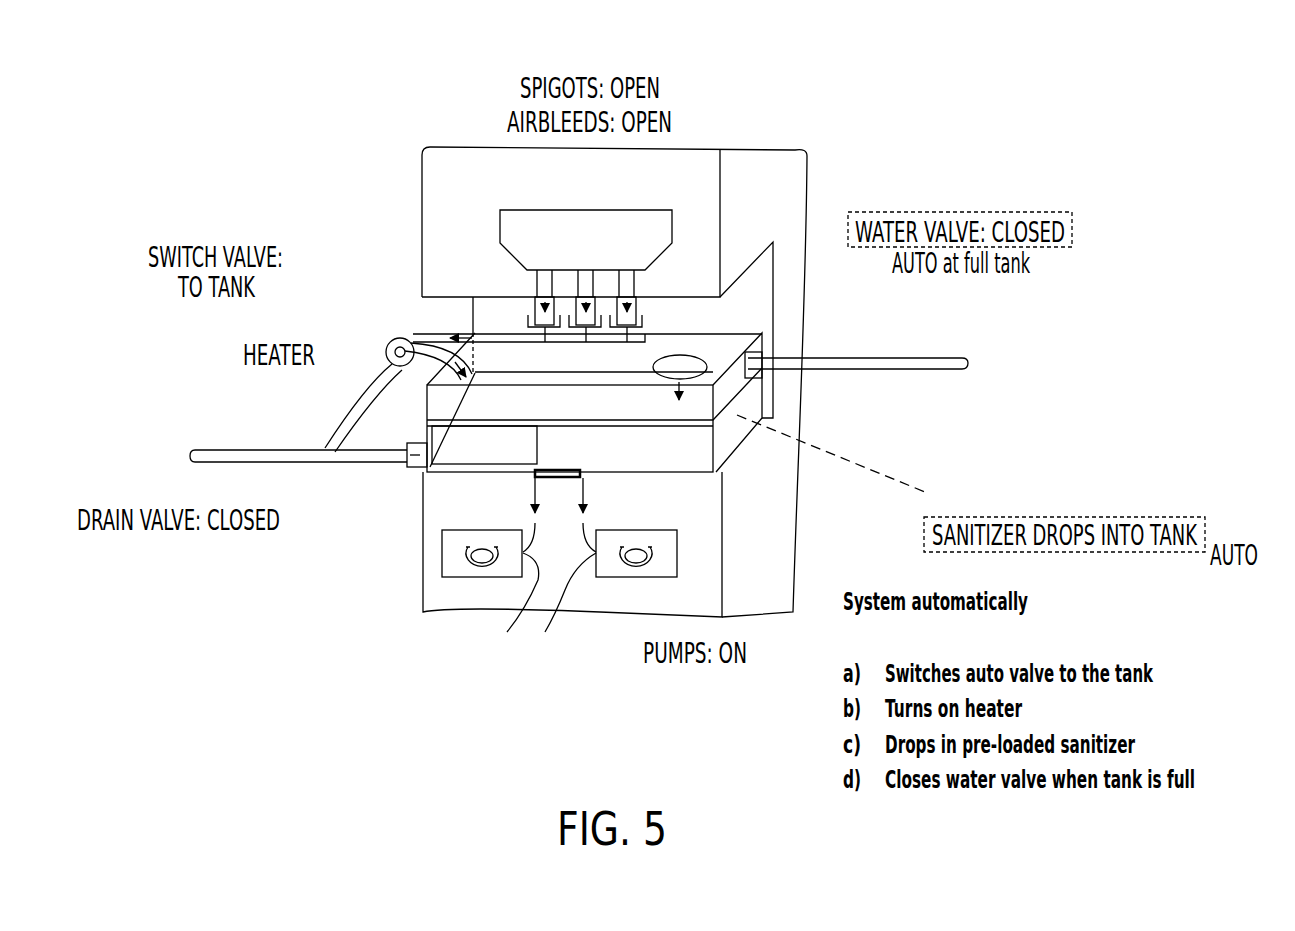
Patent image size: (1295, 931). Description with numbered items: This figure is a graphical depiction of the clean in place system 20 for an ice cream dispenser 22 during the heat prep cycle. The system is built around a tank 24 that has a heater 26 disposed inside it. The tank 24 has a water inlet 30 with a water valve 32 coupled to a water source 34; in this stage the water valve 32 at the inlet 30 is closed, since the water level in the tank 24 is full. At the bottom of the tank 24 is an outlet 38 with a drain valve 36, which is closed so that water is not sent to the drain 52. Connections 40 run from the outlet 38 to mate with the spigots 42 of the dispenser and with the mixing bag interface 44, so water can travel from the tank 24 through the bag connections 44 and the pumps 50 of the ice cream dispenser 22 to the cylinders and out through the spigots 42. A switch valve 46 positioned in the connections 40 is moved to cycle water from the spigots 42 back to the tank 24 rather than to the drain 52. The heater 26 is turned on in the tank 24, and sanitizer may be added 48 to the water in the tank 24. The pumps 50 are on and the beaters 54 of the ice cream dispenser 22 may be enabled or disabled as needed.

The clean in place system 20 is at (218, 358).
The ice cream dispenser 22 is at (457, 168).
The tank 24 is at (735, 432).
The heater 26 is at (443, 430).
The water inlet 30 is at (757, 353).
The water valve 32 is at (928, 357).
The water source 34 is at (937, 364).
The drain valve 36 is at (405, 459).
The outlet 38 is at (407, 449).
The connections 40 is at (330, 418).
The spigots 42 is at (643, 323).
The mixing bag interface 44 is at (565, 613).
The switch valve 46 is at (388, 342).
The power connection 48 is at (802, 437).
The pumps 50 is at (598, 648).
The drain 52 is at (218, 429).
The beaters 54 is at (784, 218).